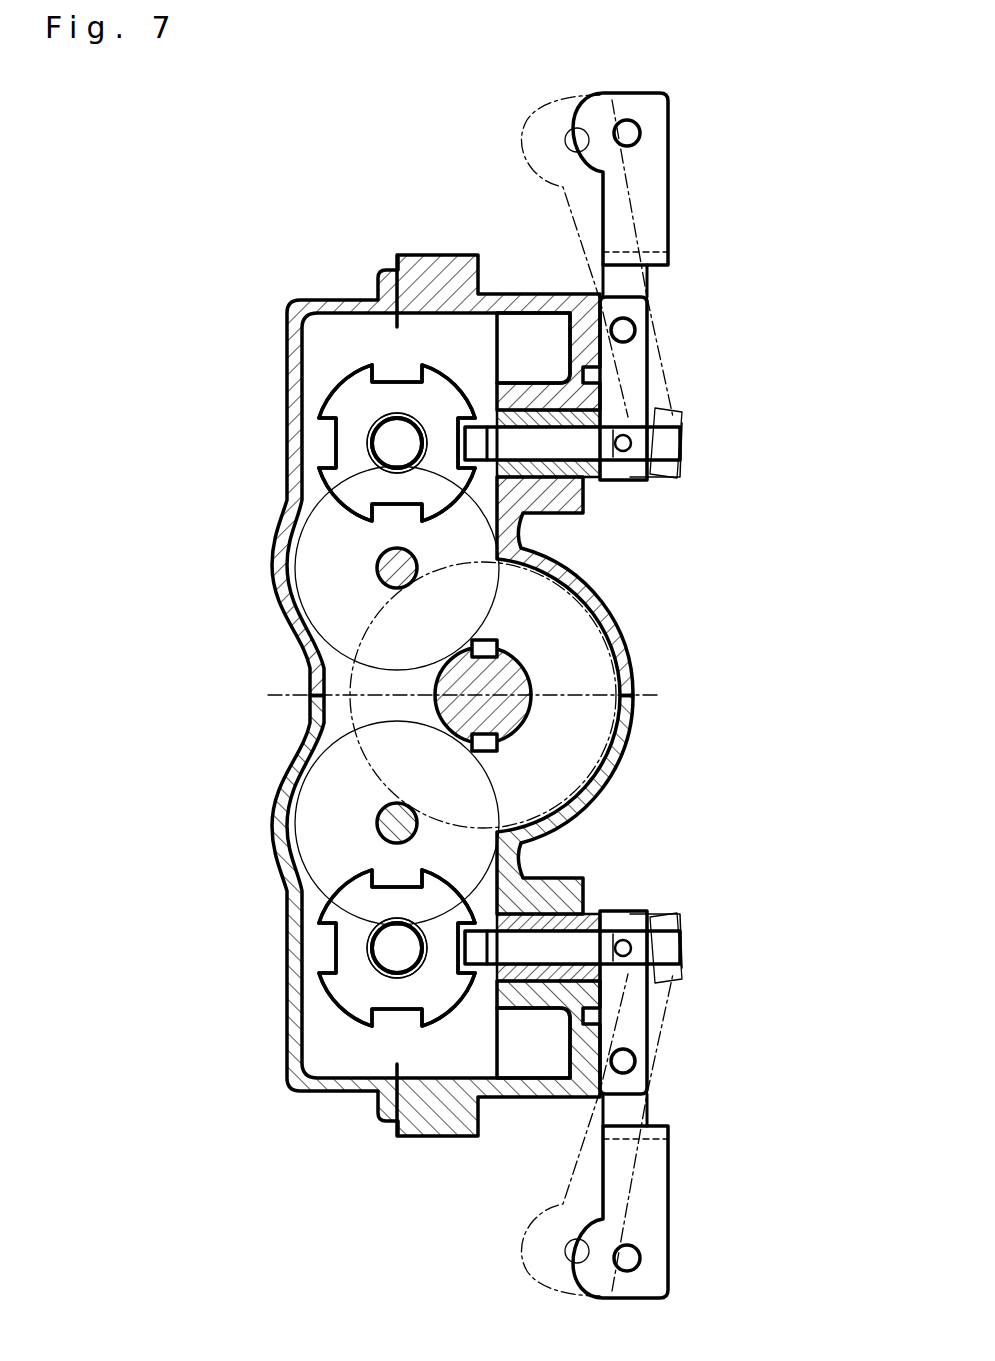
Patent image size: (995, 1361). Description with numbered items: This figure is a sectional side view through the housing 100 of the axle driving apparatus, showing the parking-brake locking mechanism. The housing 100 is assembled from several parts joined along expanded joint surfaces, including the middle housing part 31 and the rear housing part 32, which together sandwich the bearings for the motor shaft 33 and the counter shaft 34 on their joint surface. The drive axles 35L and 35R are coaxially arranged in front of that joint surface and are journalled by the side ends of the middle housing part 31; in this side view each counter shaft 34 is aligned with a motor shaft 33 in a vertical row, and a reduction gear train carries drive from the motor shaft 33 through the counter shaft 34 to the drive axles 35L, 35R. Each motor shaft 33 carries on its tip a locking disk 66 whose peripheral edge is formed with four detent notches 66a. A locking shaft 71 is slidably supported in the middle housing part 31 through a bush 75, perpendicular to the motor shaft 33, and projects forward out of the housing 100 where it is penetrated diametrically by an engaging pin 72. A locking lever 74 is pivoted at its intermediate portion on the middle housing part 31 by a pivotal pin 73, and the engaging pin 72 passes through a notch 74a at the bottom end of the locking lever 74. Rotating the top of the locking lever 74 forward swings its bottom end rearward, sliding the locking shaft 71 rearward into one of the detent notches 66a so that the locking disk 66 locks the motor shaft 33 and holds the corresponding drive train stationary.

The housing 100 is at (396, 230).
The middle housing part 31 is at (637, 690).
The rear housing part 32 is at (268, 695).
The motor shaft 33 is at (368, 443).
The counter shaft 34 is at (375, 582).
The right drive axle 35R is at (498, 650).
The left drive axle 35L is at (498, 742).
The locking disk 66 is at (287, 337).
The detent notch 66a is at (383, 372).
The locking shaft 71 is at (550, 373).
The engaging pin 72 is at (632, 418).
The pivotal pin 73 is at (637, 330).
The locking lever 74 is at (668, 182).
The notch 74a is at (627, 478).
The bush 75 is at (598, 462).